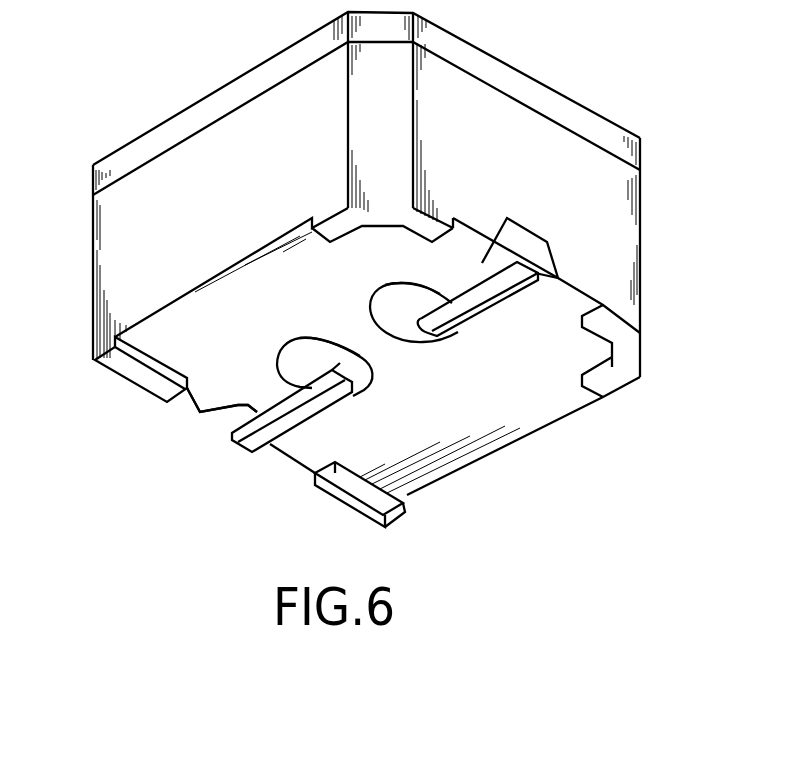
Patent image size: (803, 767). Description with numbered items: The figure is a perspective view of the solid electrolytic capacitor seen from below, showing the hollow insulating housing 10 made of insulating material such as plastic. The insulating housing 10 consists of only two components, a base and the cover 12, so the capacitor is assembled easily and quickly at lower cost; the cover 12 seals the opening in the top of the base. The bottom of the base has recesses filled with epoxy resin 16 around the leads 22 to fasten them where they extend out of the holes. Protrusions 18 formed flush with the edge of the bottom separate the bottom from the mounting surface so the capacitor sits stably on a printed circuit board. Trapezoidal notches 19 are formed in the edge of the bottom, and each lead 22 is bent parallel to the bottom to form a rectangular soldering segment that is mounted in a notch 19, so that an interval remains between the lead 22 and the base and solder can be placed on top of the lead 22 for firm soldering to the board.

The insulating housing 10 is at (561, 55).
The cover 12 is at (218, 103).
The epoxy resin 16 is at (300, 352).
The protrusions 18 is at (357, 498).
The notches 19 is at (523, 240).
The leads 22 is at (282, 405).